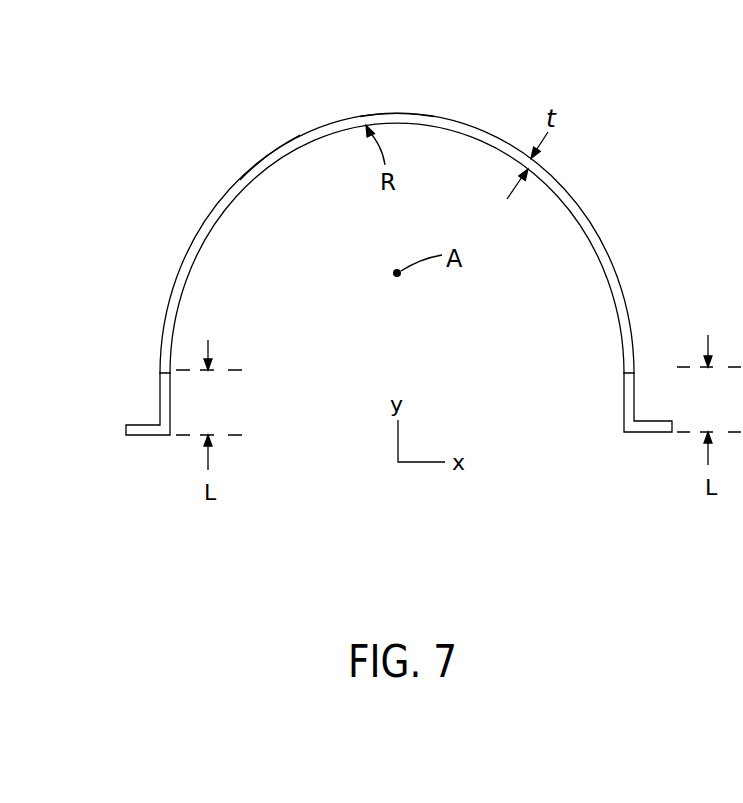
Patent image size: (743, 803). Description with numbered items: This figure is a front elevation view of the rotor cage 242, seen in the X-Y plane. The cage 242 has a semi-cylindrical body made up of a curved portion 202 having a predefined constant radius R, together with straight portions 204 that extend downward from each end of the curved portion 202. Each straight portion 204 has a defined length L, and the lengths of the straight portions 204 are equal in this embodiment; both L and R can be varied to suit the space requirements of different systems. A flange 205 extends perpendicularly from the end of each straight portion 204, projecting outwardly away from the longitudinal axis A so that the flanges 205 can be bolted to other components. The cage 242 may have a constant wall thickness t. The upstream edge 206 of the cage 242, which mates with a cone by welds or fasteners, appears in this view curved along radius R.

The curved portion 202 is at (590, 222).
The straight portions 204 is at (624, 396).
The flange 205 is at (145, 438).
The upstream edge 206 is at (417, 112).
The cage 242 is at (262, 150).